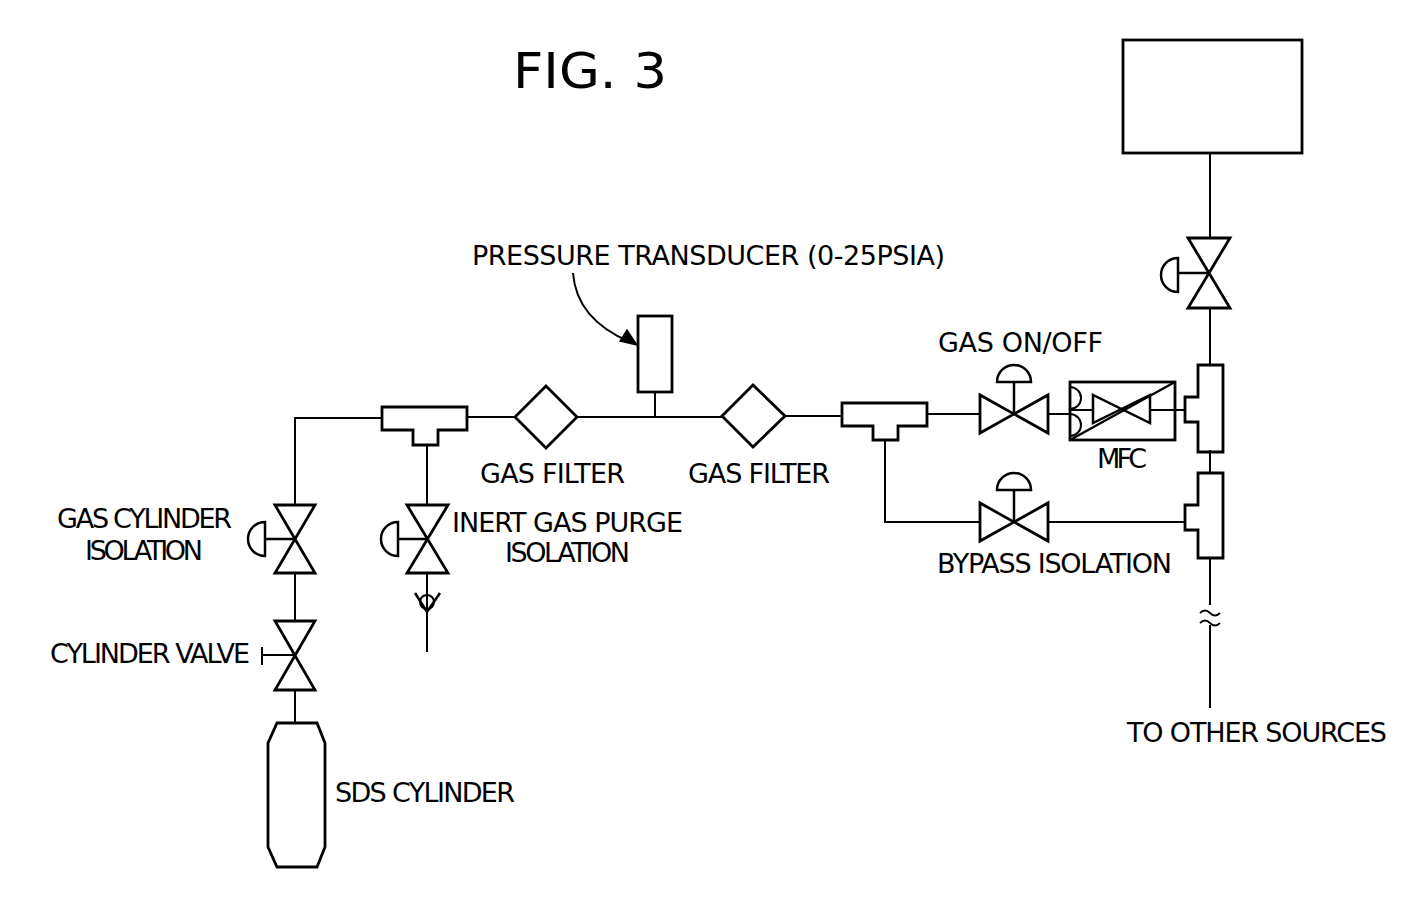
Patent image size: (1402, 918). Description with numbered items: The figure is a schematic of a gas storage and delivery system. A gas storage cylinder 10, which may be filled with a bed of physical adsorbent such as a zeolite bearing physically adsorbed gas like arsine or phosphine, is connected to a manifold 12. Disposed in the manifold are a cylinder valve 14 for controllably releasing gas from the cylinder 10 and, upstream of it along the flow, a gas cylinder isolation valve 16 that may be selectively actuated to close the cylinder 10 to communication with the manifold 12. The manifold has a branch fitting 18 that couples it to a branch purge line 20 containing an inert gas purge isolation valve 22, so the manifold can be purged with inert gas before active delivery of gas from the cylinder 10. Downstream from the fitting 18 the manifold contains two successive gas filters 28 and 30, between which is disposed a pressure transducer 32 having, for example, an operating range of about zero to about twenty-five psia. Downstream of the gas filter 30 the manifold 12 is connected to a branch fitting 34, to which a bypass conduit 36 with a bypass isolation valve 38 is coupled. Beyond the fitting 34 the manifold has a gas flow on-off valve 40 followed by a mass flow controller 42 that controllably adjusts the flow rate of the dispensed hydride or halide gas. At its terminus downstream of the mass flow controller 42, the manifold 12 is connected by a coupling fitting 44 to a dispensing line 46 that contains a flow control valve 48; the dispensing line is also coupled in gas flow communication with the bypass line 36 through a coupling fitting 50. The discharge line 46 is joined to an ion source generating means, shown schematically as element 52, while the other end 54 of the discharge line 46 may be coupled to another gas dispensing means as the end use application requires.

The gas storage cylinder 10 is at (268, 812).
The manifold 12 is at (348, 417).
The cylinder valve 14 is at (315, 662).
The gas cylinder isolation valve 16 is at (252, 527).
The branch fitting 18 is at (437, 407).
The branch purge line 20 is at (427, 480).
The inert gas purge isolation valve 22 is at (382, 530).
The gas filter 28 is at (523, 404).
The gas filter 30 is at (770, 402).
The pressure transducer 32 is at (672, 348).
The branch fitting 34 is at (893, 403).
The bypass conduit 36 is at (907, 522).
The bypass isolation valve 38 is at (1048, 512).
The gas flow on-off valve 40 is at (997, 371).
The mass flow controller 42 is at (1103, 387).
The coupling fitting 44 is at (1222, 410).
The dispensing line 46 is at (1211, 345).
The flow control valve 48 is at (1222, 248).
The coupling fitting 50 is at (1225, 537).
The ion source generating means 52 is at (1302, 88).
The other end of discharge line 54 is at (1212, 676).